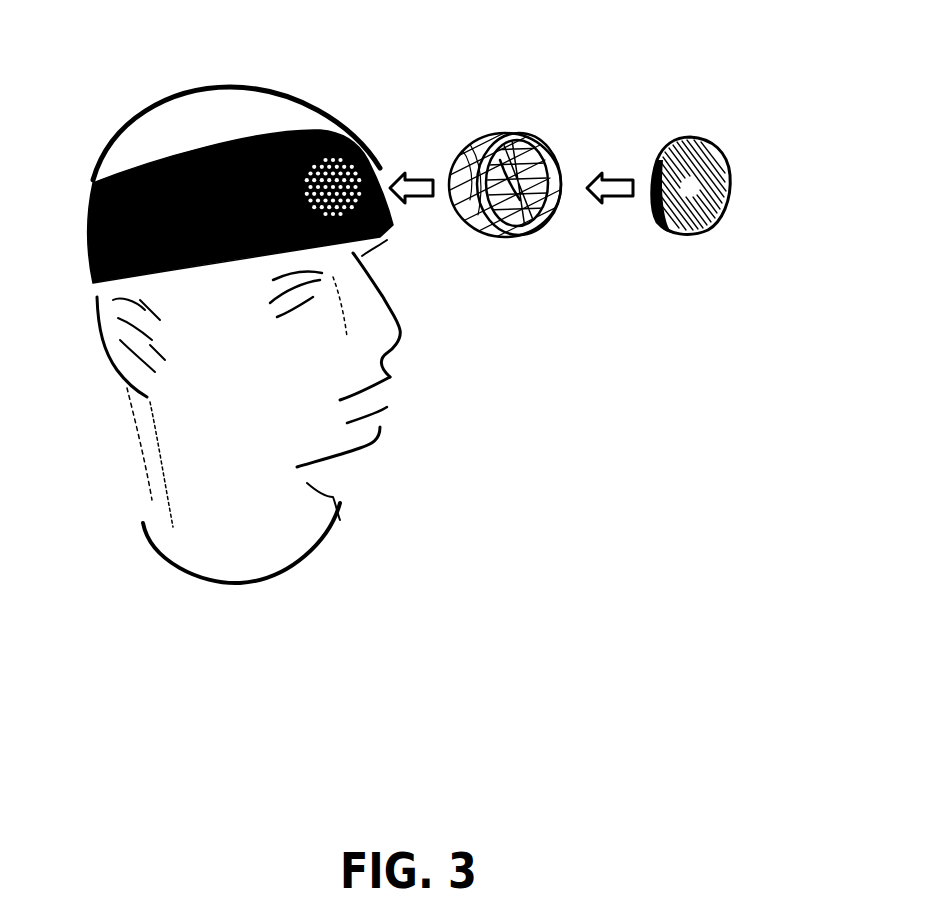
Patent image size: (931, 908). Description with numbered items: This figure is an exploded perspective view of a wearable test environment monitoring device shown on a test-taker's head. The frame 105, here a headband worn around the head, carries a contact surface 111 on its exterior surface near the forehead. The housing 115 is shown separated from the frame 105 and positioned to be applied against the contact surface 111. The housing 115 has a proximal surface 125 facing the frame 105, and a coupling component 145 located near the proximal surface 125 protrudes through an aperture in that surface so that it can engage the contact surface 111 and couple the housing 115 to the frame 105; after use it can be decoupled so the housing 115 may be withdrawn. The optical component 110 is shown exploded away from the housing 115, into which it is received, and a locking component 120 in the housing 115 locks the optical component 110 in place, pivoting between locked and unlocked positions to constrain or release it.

The frame 105 is at (88, 240).
The optical component 110 is at (723, 160).
The contact surface 111 is at (350, 143).
The housing 115 is at (518, 166).
The locking component 120 is at (556, 167).
The proximal surface 125 is at (470, 217).
The coupling component 145 is at (537, 207).